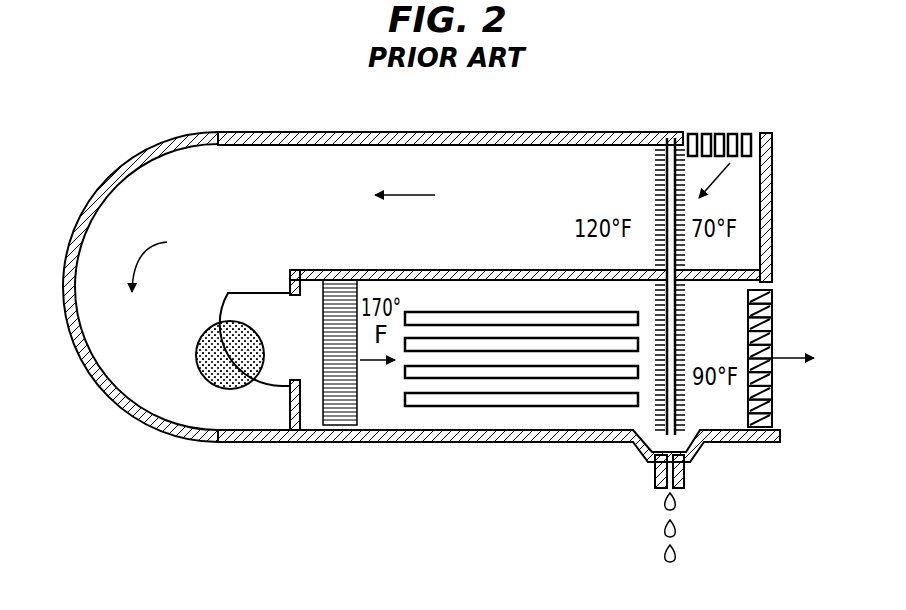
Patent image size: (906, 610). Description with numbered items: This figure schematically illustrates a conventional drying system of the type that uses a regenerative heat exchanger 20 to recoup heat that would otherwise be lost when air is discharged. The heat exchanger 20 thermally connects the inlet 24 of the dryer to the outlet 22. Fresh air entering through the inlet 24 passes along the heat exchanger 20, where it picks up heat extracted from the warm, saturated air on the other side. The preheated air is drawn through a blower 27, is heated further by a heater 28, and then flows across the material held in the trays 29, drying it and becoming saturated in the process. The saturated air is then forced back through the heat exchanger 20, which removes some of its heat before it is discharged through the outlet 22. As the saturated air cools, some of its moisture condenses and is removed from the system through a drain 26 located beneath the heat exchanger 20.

The regenerative heat exchanger 20 is at (682, 318).
The outlet 22 is at (776, 432).
The inlet 24 is at (760, 135).
The drain 26 is at (686, 468).
The blower 27 is at (226, 417).
The heater 28 is at (342, 300).
The trays 29 is at (526, 312).